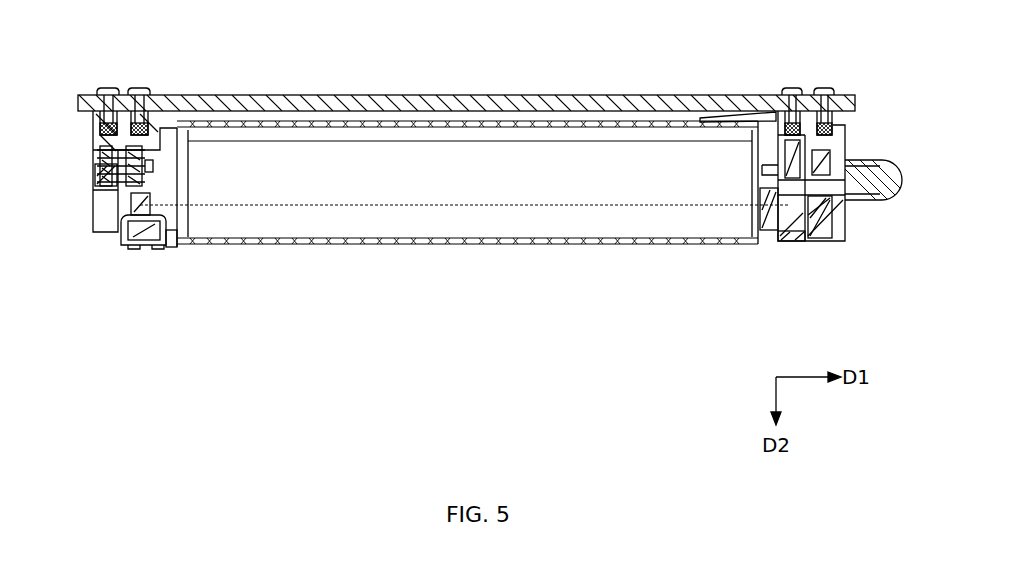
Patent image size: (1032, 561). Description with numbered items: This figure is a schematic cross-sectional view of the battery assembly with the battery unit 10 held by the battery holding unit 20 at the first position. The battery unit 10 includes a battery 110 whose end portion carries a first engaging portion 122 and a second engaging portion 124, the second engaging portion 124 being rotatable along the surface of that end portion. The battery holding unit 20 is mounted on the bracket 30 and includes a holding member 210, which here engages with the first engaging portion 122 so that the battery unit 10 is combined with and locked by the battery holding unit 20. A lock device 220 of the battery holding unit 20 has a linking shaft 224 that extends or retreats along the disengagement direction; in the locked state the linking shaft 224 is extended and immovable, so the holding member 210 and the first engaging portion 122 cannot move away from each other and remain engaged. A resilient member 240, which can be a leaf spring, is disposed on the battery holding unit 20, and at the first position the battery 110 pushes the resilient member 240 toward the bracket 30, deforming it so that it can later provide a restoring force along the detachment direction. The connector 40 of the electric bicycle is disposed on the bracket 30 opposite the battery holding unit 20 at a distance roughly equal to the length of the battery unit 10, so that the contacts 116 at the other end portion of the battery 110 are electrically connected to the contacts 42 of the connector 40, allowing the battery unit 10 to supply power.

The battery unit 10 is at (477, 256).
The battery holding unit 20 is at (887, 142).
The bracket 30 is at (428, 98).
The connector 40 is at (92, 190).
The contacts 42 is at (102, 155).
The battery 110 is at (360, 222).
The contacts 116 is at (93, 172).
The first engaging portion 122 is at (770, 192).
The second engaging portion 124 is at (781, 123).
The holding member 210 is at (779, 242).
The lock device 220 is at (887, 194).
The linking shaft 224 is at (817, 192).
The resilient member 240 is at (739, 117).